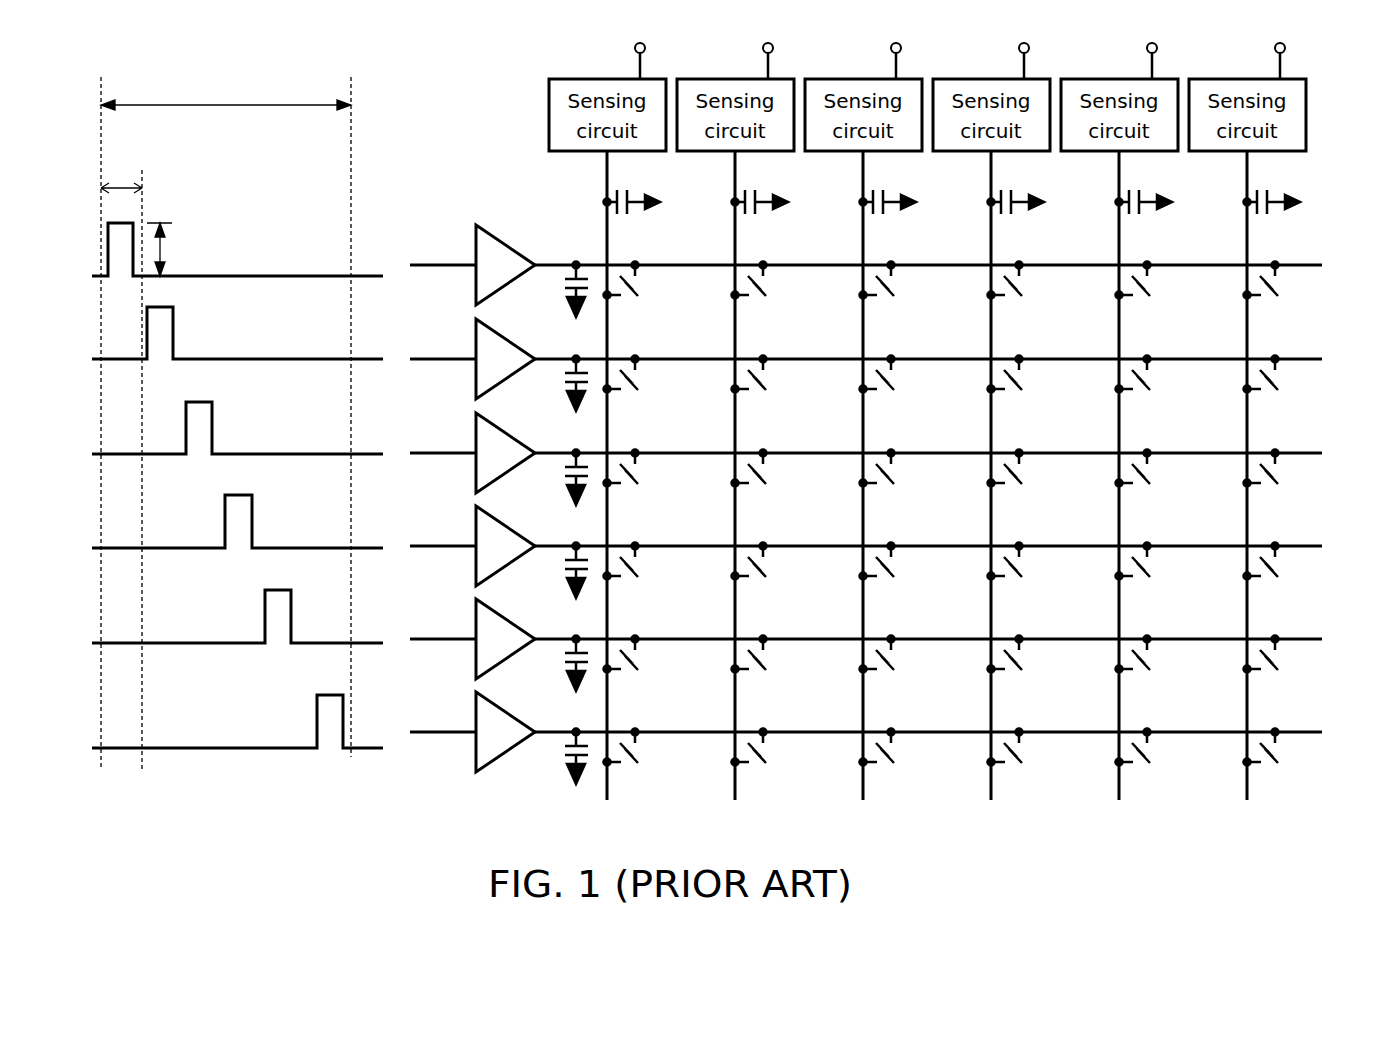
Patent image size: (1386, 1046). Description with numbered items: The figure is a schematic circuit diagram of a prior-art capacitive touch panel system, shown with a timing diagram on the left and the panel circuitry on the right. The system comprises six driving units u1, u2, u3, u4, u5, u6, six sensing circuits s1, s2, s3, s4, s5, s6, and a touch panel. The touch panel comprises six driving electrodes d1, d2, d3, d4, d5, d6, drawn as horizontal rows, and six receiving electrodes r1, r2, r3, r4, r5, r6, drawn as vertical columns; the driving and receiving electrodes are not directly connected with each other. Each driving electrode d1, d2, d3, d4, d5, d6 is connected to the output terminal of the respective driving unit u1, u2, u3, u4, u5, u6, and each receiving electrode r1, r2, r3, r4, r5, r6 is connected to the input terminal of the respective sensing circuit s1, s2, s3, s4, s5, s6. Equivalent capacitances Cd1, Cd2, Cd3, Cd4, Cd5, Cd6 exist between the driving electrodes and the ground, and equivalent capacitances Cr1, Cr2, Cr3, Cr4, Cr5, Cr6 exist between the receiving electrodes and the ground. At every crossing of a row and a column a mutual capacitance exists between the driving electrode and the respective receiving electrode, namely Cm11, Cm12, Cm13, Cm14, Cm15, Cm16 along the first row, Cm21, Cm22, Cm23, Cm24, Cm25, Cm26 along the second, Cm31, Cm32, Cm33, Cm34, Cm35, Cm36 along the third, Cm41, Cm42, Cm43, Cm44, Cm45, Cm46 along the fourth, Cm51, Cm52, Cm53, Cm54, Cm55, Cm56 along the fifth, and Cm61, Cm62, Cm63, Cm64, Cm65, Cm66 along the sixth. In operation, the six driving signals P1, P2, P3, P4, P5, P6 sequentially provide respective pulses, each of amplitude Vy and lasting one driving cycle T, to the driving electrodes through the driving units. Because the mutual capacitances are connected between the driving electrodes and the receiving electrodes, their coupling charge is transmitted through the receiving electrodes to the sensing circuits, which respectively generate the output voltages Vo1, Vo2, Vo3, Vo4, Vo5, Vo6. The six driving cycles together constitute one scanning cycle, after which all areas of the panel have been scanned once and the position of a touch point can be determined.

The driving cycle T is at (121, 171).
The pulse amplitude Vy is at (174, 249).
The driving signal P1 is at (223, 253).
The driving signal P2 is at (223, 336).
The driving signal P3 is at (223, 431).
The driving signal P4 is at (223, 525).
The driving signal P5 is at (223, 620).
The driving signal P6 is at (223, 725).
The sensing circuit s1 is at (626, 151).
The sensing circuit s2 is at (754, 151).
The sensing circuit s3 is at (882, 151).
The sensing circuit s4 is at (1010, 151).
The sensing circuit s5 is at (1138, 151).
The sensing circuit s6 is at (1266, 151).
The output voltage Vo1 is at (630, 49).
The output voltage Vo2 is at (758, 49).
The output voltage Vo3 is at (886, 49).
The output voltage Vo4 is at (1014, 49).
The output voltage Vo5 is at (1142, 49).
The output voltage Vo6 is at (1270, 49).
The receiving electrode r1 is at (607, 782).
The receiving electrode r2 is at (735, 782).
The receiving electrode r3 is at (863, 782).
The receiving electrode r4 is at (991, 782).
The receiving electrode r5 is at (1119, 782).
The receiving electrode r6 is at (1247, 782).
The equivalent capacitance Cr1 is at (632, 217).
The equivalent capacitance Cr2 is at (760, 217).
The equivalent capacitance Cr3 is at (888, 217).
The equivalent capacitance Cr4 is at (1016, 217).
The equivalent capacitance Cr5 is at (1144, 217).
The equivalent capacitance Cr6 is at (1272, 217).
The driving electrode d1 is at (1322, 265).
The driving electrode d2 is at (1322, 359).
The driving electrode d3 is at (1322, 453).
The driving electrode d4 is at (1322, 546).
The driving electrode d5 is at (1322, 639).
The driving electrode d6 is at (1322, 732).
The driving unit u1 is at (481, 247).
The driving unit u2 is at (481, 341).
The driving unit u3 is at (481, 435).
The driving unit u4 is at (481, 528).
The driving unit u5 is at (481, 621).
The driving unit u6 is at (481, 714).
The equivalent capacitance Cd1 is at (555, 290).
The equivalent capacitance Cd2 is at (555, 384).
The equivalent capacitance Cd3 is at (555, 478).
The equivalent capacitance Cd4 is at (555, 571).
The equivalent capacitance Cd5 is at (555, 664).
The equivalent capacitance Cd6 is at (555, 757).
The mutual capacitance Cm11 is at (651, 289).
The mutual capacitance Cm12 is at (779, 289).
The mutual capacitance Cm13 is at (907, 289).
The mutual capacitance Cm14 is at (1035, 289).
The mutual capacitance Cm15 is at (1163, 289).
The mutual capacitance Cm16 is at (1291, 289).
The mutual capacitance Cm21 is at (651, 383).
The mutual capacitance Cm22 is at (779, 383).
The mutual capacitance Cm23 is at (907, 383).
The mutual capacitance Cm24 is at (1035, 383).
The mutual capacitance Cm25 is at (1163, 383).
The mutual capacitance Cm26 is at (1291, 383).
The mutual capacitance Cm31 is at (651, 477).
The mutual capacitance Cm32 is at (779, 477).
The mutual capacitance Cm33 is at (907, 477).
The mutual capacitance Cm34 is at (1035, 477).
The mutual capacitance Cm35 is at (1163, 477).
The mutual capacitance Cm36 is at (1291, 477).
The mutual capacitance Cm41 is at (651, 570).
The mutual capacitance Cm42 is at (779, 570).
The mutual capacitance Cm43 is at (907, 570).
The mutual capacitance Cm44 is at (1035, 570).
The mutual capacitance Cm45 is at (1163, 570).
The mutual capacitance Cm46 is at (1285, 578).
The mutual capacitance Cm51 is at (651, 663).
The mutual capacitance Cm52 is at (779, 663).
The mutual capacitance Cm53 is at (907, 663).
The mutual capacitance Cm54 is at (1035, 663).
The mutual capacitance Cm55 is at (1163, 663).
The mutual capacitance Cm56 is at (1291, 663).
The mutual capacitance Cm61 is at (651, 756).
The mutual capacitance Cm62 is at (779, 756).
The mutual capacitance Cm63 is at (907, 756).
The mutual capacitance Cm64 is at (1035, 756).
The mutual capacitance Cm65 is at (1163, 756).
The mutual capacitance Cm66 is at (1291, 756).